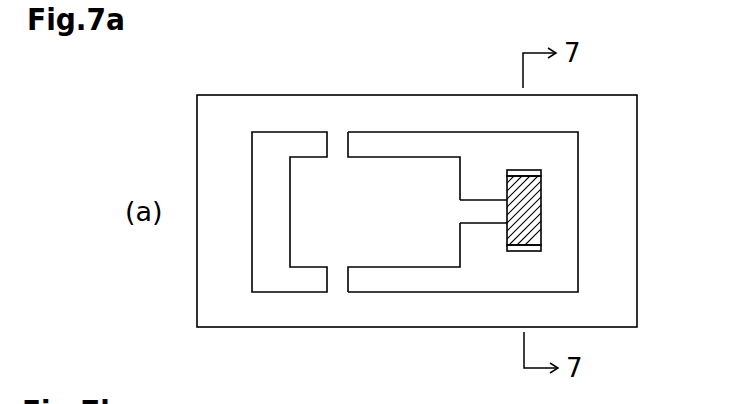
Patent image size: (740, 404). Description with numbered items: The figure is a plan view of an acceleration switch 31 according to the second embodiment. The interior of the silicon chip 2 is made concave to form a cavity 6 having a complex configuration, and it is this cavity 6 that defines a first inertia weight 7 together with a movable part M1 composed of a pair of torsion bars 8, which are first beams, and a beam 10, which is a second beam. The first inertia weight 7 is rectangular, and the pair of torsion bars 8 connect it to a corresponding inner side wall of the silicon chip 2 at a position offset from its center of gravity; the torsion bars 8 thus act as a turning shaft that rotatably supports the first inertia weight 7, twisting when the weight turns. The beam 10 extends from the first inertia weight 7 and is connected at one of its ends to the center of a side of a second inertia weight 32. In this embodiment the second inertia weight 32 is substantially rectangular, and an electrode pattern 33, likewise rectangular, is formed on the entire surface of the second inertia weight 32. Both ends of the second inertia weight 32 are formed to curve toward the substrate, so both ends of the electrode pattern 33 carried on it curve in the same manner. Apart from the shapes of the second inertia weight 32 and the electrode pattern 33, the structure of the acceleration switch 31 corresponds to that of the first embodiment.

The acceleration switch 31 is at (247, 72).
The silicon chip 2 is at (638, 202).
The cavity 6 is at (487, 287).
The first inertia weight 7 is at (416, 163).
The torsion bars 8 is at (335, 148).
The beam 10 is at (482, 200).
The second inertia weight 32 is at (535, 162).
The electrode pattern 33 is at (540, 218).
The movable part M1 is at (290, 203).